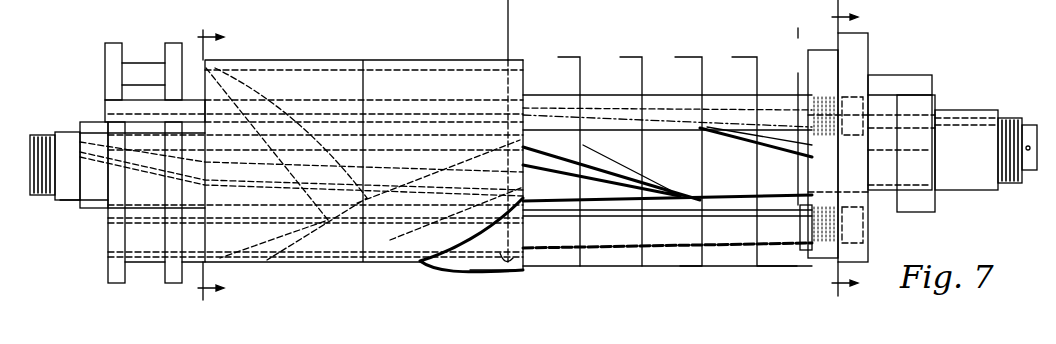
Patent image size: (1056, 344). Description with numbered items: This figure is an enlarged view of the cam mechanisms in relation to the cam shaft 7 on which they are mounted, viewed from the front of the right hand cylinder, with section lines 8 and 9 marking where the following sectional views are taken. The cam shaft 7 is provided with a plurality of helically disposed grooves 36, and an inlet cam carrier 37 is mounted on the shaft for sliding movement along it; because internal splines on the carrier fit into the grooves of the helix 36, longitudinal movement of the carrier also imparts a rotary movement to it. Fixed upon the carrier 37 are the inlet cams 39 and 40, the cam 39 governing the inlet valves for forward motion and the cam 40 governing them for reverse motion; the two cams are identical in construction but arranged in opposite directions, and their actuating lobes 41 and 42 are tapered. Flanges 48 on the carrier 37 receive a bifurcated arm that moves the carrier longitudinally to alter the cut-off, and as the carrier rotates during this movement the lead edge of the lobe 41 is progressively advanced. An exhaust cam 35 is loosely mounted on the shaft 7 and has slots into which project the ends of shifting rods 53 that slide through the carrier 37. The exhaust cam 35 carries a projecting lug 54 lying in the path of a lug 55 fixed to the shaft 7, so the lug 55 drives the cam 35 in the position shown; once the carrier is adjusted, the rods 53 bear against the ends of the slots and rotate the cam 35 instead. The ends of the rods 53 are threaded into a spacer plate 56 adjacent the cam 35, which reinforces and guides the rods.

The cam shaft 7 is at (95, 190).
The section line 8- 8 is at (210, 163).
The section line 9- 9 is at (834, 148).
The exhaust cam 35 is at (855, 50).
The helically disposed grooves 36 is at (88, 122).
The inlet cam carrier 37 is at (125, 195).
The inlet cam 39 is at (450, 60).
The inlet cam 40 is at (305, 60).
The actuating lobe 41 is at (527, 267).
The actuating lobe 42 is at (327, 235).
The flanges 48 is at (170, 48).
The shifting rods 53 is at (573, 100).
The projecting lug 54 is at (882, 90).
The lug 55 is at (915, 93).
The spacer plate 56 is at (801, 72).